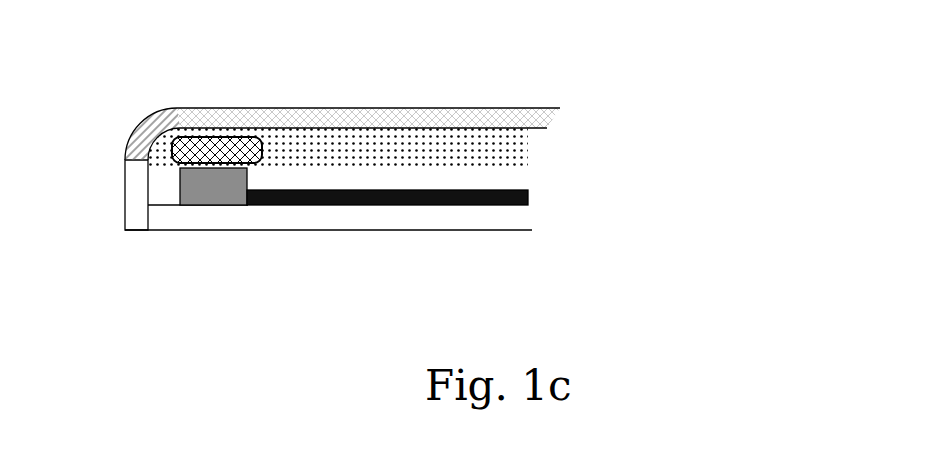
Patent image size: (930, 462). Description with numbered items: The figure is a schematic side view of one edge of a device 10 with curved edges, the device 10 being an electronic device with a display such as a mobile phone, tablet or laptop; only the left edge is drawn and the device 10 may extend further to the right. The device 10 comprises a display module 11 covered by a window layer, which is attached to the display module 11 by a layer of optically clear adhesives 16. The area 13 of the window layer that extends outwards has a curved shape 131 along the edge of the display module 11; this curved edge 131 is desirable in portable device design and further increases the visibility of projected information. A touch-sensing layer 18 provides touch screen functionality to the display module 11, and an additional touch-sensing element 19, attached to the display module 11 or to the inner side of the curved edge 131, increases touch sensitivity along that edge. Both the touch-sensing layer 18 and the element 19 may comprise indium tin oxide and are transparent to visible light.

The device 10 is at (402, 85).
The display module 11 is at (176, 192).
The area of the window layer extending outwards 13 is at (173, 107).
The curved edge 131 is at (143, 133).
The optically clear adhesives 16 is at (520, 140).
The touch-sensing layer 18 is at (360, 203).
The additional touch-sensing element 19 is at (253, 137).